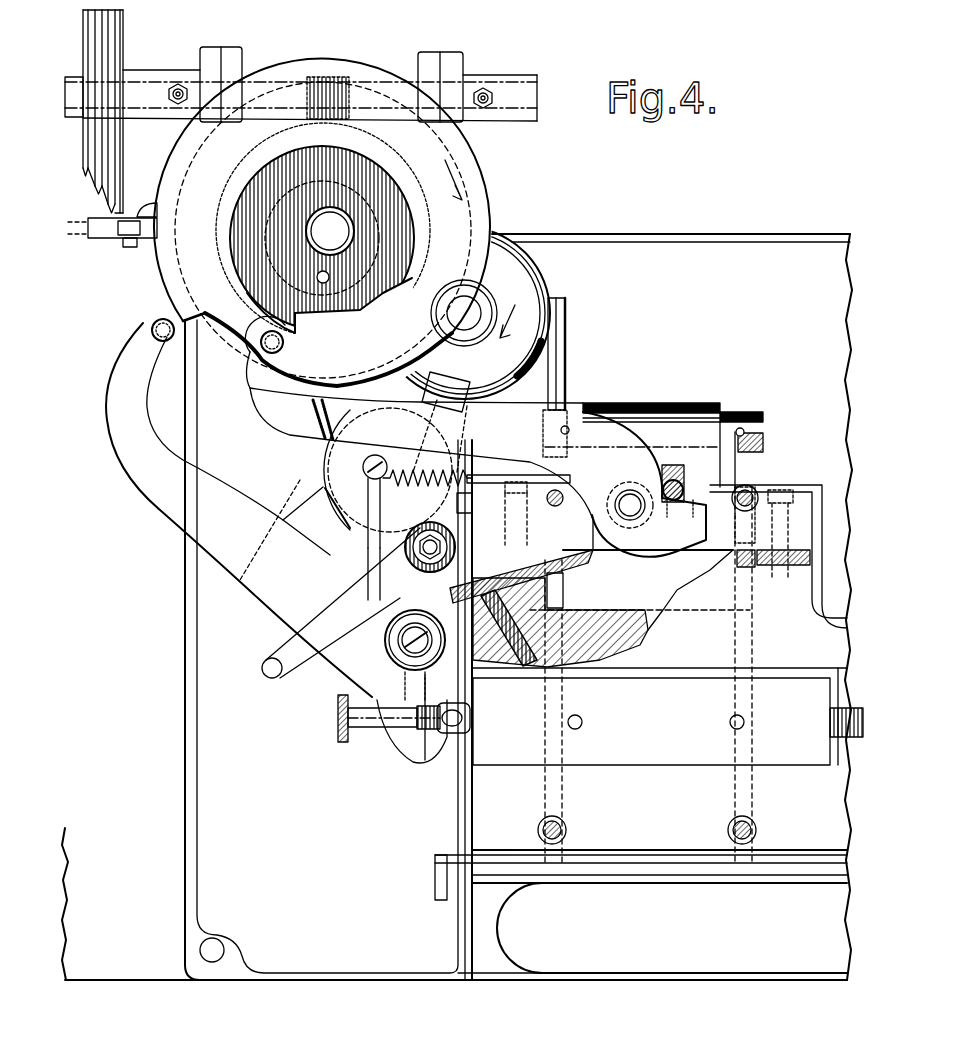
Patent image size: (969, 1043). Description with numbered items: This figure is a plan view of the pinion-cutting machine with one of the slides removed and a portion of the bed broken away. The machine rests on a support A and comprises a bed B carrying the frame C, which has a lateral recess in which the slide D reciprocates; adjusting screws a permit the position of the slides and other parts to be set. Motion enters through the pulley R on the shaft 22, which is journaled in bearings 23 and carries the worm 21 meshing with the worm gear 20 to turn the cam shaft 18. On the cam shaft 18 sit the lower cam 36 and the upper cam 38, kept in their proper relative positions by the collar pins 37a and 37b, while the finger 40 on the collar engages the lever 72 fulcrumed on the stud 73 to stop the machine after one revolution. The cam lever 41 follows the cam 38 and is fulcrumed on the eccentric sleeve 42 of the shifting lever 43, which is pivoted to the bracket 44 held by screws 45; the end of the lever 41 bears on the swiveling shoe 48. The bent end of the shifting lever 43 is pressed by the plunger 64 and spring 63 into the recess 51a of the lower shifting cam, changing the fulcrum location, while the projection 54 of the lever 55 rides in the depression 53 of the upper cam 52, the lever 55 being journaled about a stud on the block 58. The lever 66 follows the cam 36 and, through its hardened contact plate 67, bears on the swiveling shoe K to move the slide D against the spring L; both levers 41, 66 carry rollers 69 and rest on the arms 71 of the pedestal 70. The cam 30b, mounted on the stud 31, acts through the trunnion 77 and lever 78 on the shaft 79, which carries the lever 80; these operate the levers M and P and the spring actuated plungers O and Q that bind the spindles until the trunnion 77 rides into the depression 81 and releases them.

The support A is at (123, 901).
The bed B is at (327, 650).
The frame C is at (470, 804).
The slide D is at (660, 716).
The swiveling shoe K is at (440, 700).
The spring L is at (828, 728).
The lever M is at (560, 732).
The spring actuated plunger O is at (567, 830).
The lever P is at (750, 672).
The spring actuated plunger Q is at (752, 822).
The pulley R is at (124, 45).
The cam shaft 18 is at (330, 231).
The worm gear 20 is at (422, 160).
The worm 21 is at (320, 80).
The shaft 22 is at (538, 103).
The bearings 23 is at (178, 82).
The cam 30b is at (540, 283).
The stud 31 is at (476, 302).
The cam 36 is at (316, 297).
The pin or projection 37a is at (353, 306).
The pin or projection 37b is at (245, 290).
The cam 38 is at (325, 243).
The finger 40 is at (150, 204).
The cam lever 41 is at (420, 451).
The eccentric sleeve 42 is at (645, 490).
The shifting lever 43 is at (500, 560).
The bracket 44 is at (816, 485).
The screws or bolts 45 is at (515, 480).
The swiveling shoe 48 is at (680, 484).
The recess or depression 51a is at (445, 575).
The cam 52 is at (470, 503).
The depression 53 is at (385, 575).
The projection 54 is at (380, 562).
The lever 55 is at (400, 545).
The block 58 is at (375, 730).
The spring 63 is at (520, 665).
The plunger 64 is at (555, 600).
The lever 66 is at (345, 652).
The hardened steel contact plate 67 is at (425, 762).
The rollers 69 is at (150, 322).
The post or pedestal 70 is at (312, 466).
The arms 71 is at (288, 500).
The lever 72 is at (104, 228).
The stud 73 is at (130, 247).
The roll or trunnion 77 is at (553, 302).
The lever 78 is at (566, 350).
The shaft 79 is at (758, 415).
The lever 80 is at (728, 565).
The depression 81 is at (540, 343).
The adjusting screws a is at (755, 470).